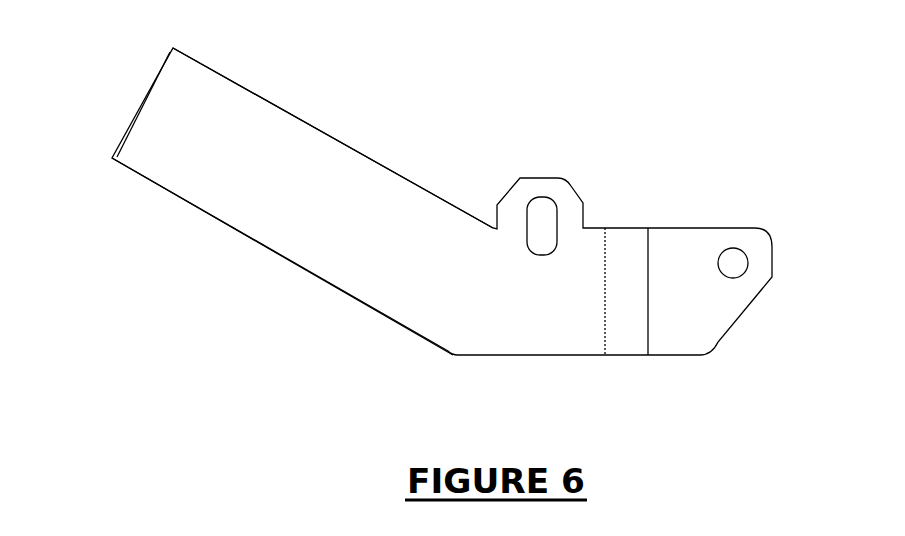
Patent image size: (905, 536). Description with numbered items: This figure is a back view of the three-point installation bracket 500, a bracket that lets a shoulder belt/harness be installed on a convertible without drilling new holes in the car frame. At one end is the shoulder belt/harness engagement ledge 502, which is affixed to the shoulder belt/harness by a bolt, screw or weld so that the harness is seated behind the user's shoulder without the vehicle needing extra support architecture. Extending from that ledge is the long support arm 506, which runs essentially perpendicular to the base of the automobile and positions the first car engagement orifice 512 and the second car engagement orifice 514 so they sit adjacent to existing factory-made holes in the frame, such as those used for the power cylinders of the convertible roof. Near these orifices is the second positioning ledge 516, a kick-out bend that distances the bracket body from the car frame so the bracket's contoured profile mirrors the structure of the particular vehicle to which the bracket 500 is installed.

The three-point installation bracket 500 is at (680, 118).
The shoulder belt/harness engagement ledge 502 is at (163, 78).
The support arm 506 is at (243, 207).
The first car engagement orifice 512 is at (540, 218).
The second car engagement orifice 514 is at (735, 263).
The second positioning ledge 516 is at (627, 237).